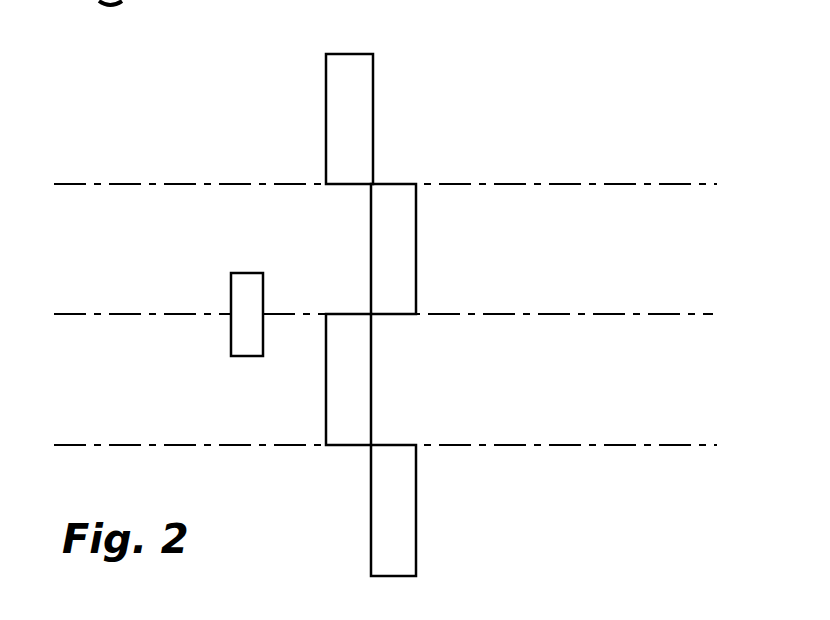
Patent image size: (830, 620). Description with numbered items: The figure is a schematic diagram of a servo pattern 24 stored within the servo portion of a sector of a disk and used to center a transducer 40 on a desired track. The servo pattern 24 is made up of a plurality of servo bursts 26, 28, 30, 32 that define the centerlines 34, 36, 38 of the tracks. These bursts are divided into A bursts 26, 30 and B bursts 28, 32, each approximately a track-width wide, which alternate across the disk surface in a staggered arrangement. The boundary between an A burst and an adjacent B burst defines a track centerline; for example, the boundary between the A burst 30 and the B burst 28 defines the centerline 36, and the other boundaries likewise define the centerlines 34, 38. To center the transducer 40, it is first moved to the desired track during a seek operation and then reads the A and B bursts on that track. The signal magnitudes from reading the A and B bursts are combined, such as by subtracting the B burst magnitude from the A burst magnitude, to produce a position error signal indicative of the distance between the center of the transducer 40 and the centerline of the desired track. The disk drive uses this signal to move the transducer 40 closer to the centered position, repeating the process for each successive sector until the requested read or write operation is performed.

The servo pattern 24 is at (387, 288).
The A burst 26 is at (326, 112).
The B burst 28 is at (416, 228).
The A burst 30 is at (326, 403).
The B burst 32 is at (416, 497).
The centerline 34 is at (690, 184).
The centerline 36 is at (690, 314).
The centerline 38 is at (690, 445).
The transducer 40 is at (247, 273).